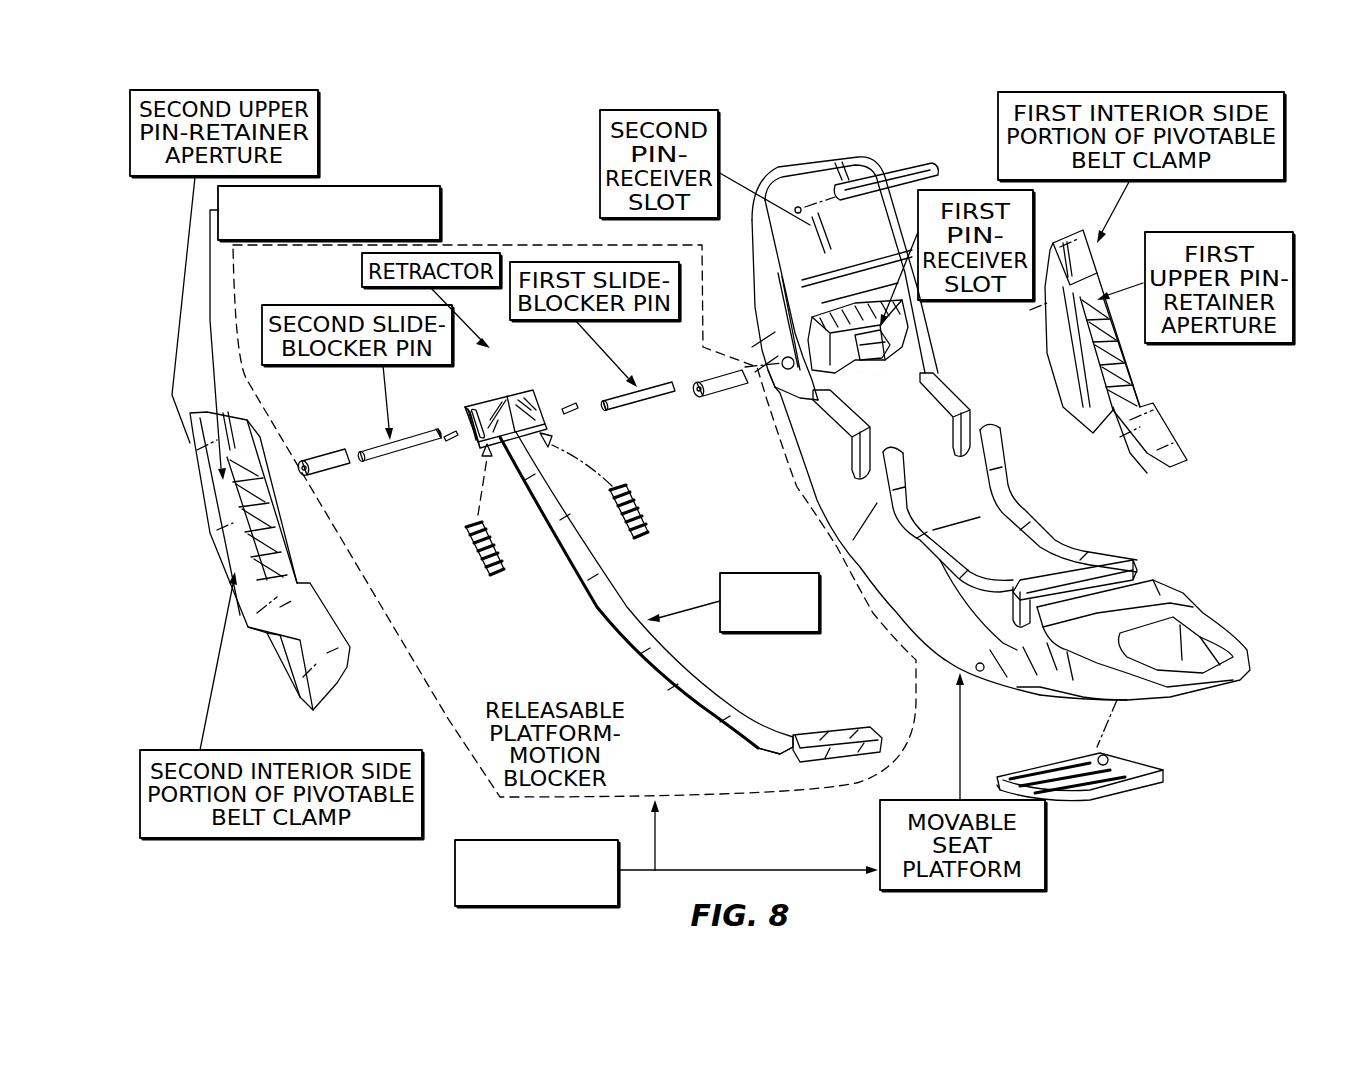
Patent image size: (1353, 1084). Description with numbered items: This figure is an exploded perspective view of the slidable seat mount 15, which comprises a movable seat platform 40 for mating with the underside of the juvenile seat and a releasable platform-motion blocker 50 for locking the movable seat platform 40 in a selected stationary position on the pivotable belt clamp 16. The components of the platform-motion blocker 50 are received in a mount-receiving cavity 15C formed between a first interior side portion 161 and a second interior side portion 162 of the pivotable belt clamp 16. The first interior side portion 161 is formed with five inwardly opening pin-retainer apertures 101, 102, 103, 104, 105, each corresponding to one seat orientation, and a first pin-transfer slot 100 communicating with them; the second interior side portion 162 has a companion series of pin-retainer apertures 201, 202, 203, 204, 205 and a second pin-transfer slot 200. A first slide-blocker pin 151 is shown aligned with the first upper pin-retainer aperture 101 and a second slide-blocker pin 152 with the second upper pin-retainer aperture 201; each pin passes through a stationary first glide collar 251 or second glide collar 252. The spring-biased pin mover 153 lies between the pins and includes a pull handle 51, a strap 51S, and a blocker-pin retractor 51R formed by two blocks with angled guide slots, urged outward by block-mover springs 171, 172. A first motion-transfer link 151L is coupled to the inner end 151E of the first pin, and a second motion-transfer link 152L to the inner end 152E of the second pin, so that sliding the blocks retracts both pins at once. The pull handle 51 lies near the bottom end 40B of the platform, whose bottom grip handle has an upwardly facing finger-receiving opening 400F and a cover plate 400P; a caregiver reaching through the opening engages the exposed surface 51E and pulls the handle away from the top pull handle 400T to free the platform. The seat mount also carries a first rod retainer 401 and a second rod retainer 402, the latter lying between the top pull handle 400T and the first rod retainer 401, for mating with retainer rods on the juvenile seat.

The slidable seat mount 15 is at (457, 884).
The mount-receiving cavity 15C is at (420, 186).
The pivotable belt clamp 16 is at (1192, 438).
The movable seat platform 40 is at (793, 146).
The bottom end 40B is at (1248, 626).
The top pull handle 400T is at (903, 180).
The finger-receiving opening 400F is at (1178, 638).
The cover plate 400P is at (1129, 805).
The first rod retainer 401 is at (1159, 565).
The second rod retainer 402 is at (927, 427).
The releasable platform-motion blocker 50 is at (464, 243).
The pull handle 51 is at (845, 737).
The exposed surface 51E is at (765, 760).
The blocker-pin retractor 51R is at (497, 252).
The strap 51S is at (627, 641).
The first pin-transfer slot 100 is at (1113, 420).
The first upper pin-retainer aperture 101 is at (1221, 232).
The second pin-retainer aperture 102 is at (1085, 312).
The third pin-retainer aperture 103 is at (1093, 335).
The fourth pin-retainer aperture 104 is at (1107, 347).
The lower pin-retainer aperture 105 is at (1113, 387).
The first slide-blocker pin 151 is at (570, 320).
The inner end of first slide-blocker pin 151E is at (606, 399).
The first motion-transfer link 151L is at (578, 406).
The second slide-blocker pin 152 is at (294, 305).
The inner end of second slide-blocker pin 152E is at (431, 436).
The second motion-transfer link 152L is at (453, 440).
The pin mover 153 is at (756, 573).
The first interior side portion 161 is at (520, 392).
The second interior side portion 162 is at (489, 404).
The block-mover spring 171 is at (634, 511).
The block-mover spring 172 is at (477, 551).
The second pin-transfer slot 200 is at (246, 424).
The second upper pin-retainer aperture 201 is at (319, 137).
The pin-retainer aperture 202 is at (264, 495).
The pin-retainer aperture 203 is at (284, 518).
The pin-retainer aperture 204 is at (294, 545).
The pin-retainer aperture 205 is at (304, 571).
The first glide collar 251 is at (725, 396).
The second glide collar 252 is at (311, 458).